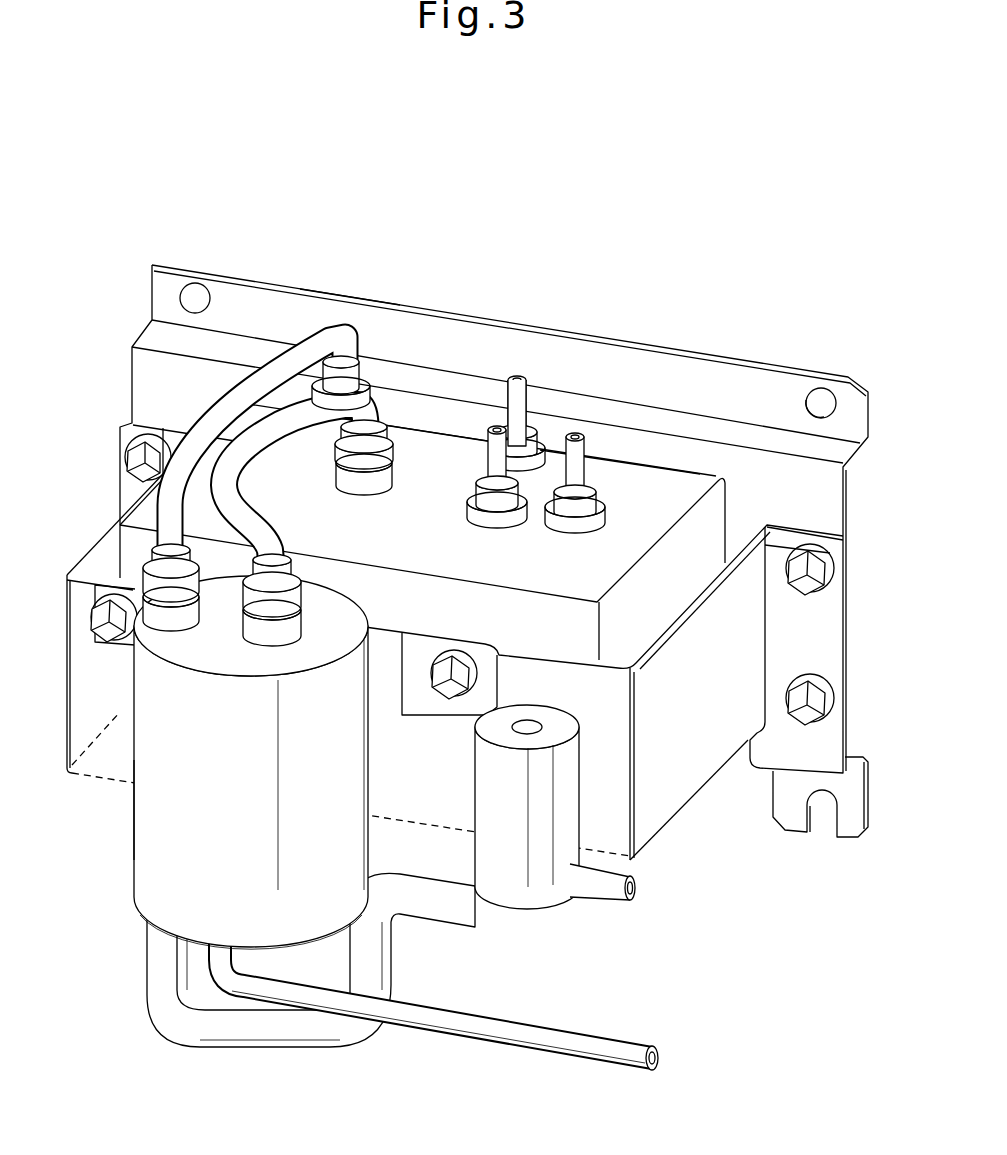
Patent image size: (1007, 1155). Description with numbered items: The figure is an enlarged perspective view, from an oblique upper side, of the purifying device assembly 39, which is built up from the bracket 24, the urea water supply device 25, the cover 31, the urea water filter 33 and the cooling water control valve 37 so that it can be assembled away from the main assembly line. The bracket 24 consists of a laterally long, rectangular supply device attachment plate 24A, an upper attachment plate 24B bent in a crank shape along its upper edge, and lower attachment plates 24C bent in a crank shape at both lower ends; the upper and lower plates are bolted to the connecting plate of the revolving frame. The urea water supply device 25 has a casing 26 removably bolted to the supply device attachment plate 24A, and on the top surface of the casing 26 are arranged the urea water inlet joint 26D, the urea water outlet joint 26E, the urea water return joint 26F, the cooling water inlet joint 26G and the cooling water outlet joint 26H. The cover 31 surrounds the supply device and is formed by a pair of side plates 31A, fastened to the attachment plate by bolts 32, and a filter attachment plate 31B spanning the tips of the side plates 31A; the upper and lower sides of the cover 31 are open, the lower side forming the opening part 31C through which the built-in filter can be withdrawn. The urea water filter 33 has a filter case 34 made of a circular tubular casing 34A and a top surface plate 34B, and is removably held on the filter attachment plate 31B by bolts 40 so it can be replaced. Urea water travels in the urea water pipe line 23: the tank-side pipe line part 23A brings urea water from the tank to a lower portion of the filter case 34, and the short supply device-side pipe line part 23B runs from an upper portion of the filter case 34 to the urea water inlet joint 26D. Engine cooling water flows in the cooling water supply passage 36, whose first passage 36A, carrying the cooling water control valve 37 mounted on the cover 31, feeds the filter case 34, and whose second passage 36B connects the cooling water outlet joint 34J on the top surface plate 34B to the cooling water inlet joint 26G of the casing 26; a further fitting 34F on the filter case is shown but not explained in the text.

The urea water pipe line 23 is at (420, 1020).
The tank-side pipe line part 23A is at (515, 1037).
The supply device-side pipe line part 23B is at (268, 440).
The bracket 24 is at (706, 370).
The supply device attachment plate 24A is at (751, 465).
The upper attachment plate 24B is at (256, 290).
The lower attachment plates 24C is at (850, 830).
The urea water supply device 25 is at (433, 442).
The casing 26 is at (633, 478).
The urea water inlet joint 26D is at (385, 420).
The urea water outlet joint 26E is at (578, 468).
The urea water return joint 26F is at (511, 378).
The cooling water inlet joint 26G is at (325, 335).
The cooling water outlet joint 26H is at (522, 440).
The cover 31 is at (690, 757).
The side plates 31A is at (98, 562).
The filter attachment plate 31B is at (540, 640).
The opening part 31C is at (640, 830).
The bolts 32 is at (130, 465).
The urea water filter 33 is at (128, 822).
The filter case 34 is at (160, 852).
The circular tubular casing 34A is at (175, 900).
The top surface plate 34B is at (320, 605).
The tank port 34F is at (263, 647).
The cooling water outlet joint 34J is at (175, 632).
The cooling water supply passage 36 is at (226, 1035).
The first passage 36A is at (300, 1025).
The second passage 36B is at (235, 400).
The cooling water control valve 37 is at (540, 880).
The purifying device assembly 39 is at (350, 285).
The bolts 40 is at (108, 628).